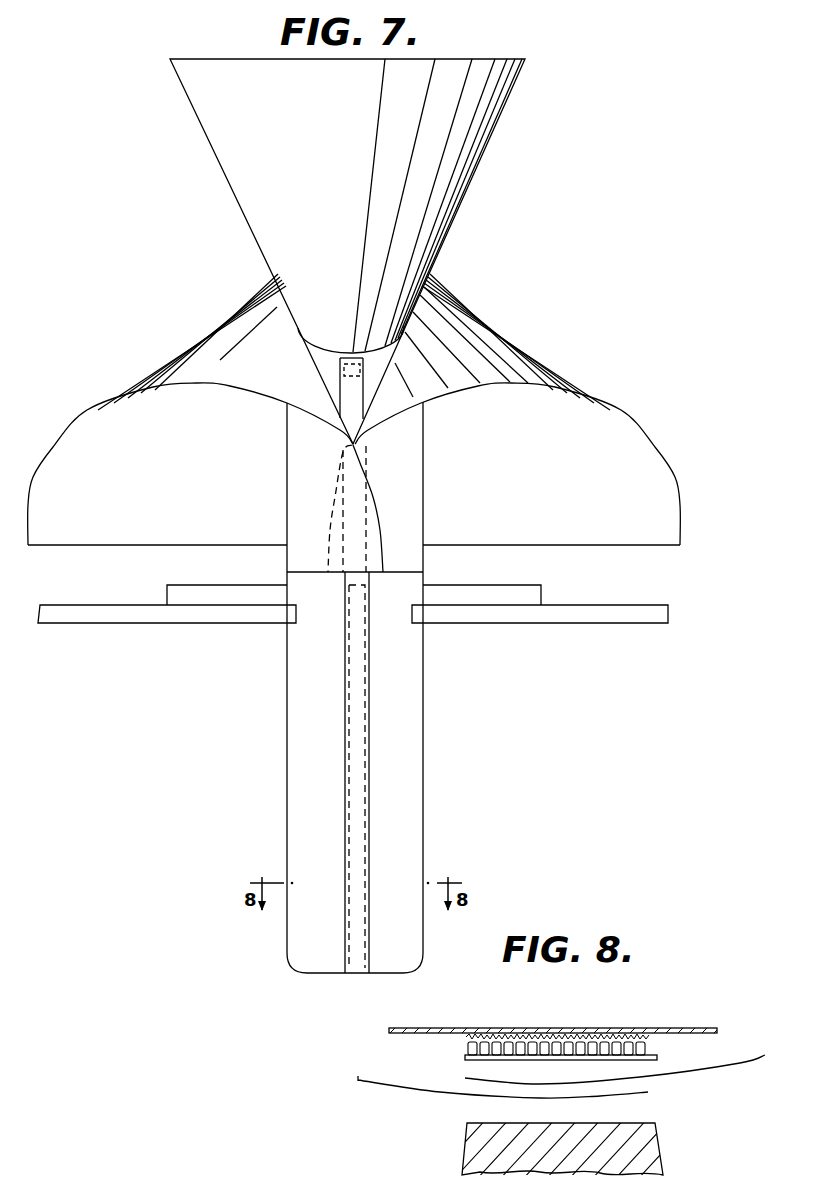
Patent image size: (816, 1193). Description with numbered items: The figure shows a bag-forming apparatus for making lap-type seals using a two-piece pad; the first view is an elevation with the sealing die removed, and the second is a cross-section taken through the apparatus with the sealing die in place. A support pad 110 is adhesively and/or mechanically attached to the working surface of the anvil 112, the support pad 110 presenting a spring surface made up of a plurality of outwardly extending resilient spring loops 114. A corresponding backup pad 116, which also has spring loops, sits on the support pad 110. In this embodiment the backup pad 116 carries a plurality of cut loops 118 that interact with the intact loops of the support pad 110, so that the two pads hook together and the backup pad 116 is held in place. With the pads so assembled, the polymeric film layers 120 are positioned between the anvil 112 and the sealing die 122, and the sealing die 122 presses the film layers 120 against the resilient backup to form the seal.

In FIG. 7, the support pad 110 is at (364, 803).
In FIG. 7, the anvil 112 is at (425, 838).
In FIG. 8, the anvil 112 is at (612, 1026).
In FIG. 8, the resilient spring loops 114 is at (648, 1034).
In FIG. 7, the backup pad 116 is at (372, 765).
In FIG. 8, the backup pad 116 is at (659, 1052).
In FIG. 8, the cut loops 118 is at (467, 1046).
In FIG. 8, the polymeric film layers 120 is at (652, 1096).
In FIG. 8, the sealing die 122 is at (666, 1150).